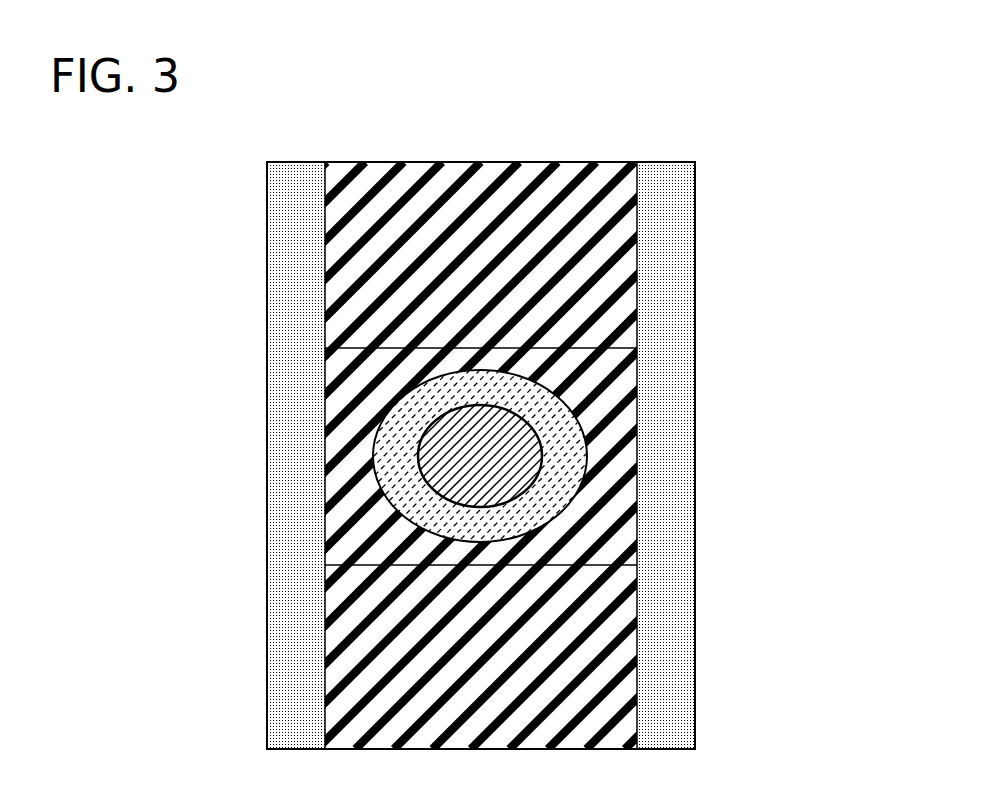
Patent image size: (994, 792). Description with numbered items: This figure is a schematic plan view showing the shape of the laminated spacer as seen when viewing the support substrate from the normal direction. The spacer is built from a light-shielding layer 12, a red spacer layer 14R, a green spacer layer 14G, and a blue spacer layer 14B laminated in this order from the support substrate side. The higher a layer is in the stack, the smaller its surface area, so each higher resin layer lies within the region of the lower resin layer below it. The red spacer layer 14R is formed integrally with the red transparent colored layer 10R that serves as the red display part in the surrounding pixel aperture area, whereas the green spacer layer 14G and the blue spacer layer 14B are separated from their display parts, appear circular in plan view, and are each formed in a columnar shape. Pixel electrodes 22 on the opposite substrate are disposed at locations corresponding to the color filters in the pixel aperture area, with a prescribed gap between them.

The red transparent colored layer (red display part) 10R is at (350, 245).
The light-shielding layer 12 is at (675, 200).
The pixel electrode 22 is at (590, 270).
The blue transparent colored layer (blue spacer layer) 14B is at (525, 458).
The green transparent colored layer (green spacer layer) 14G is at (565, 487).
The red transparent colored layer (red spacer layer) 14R is at (620, 533).